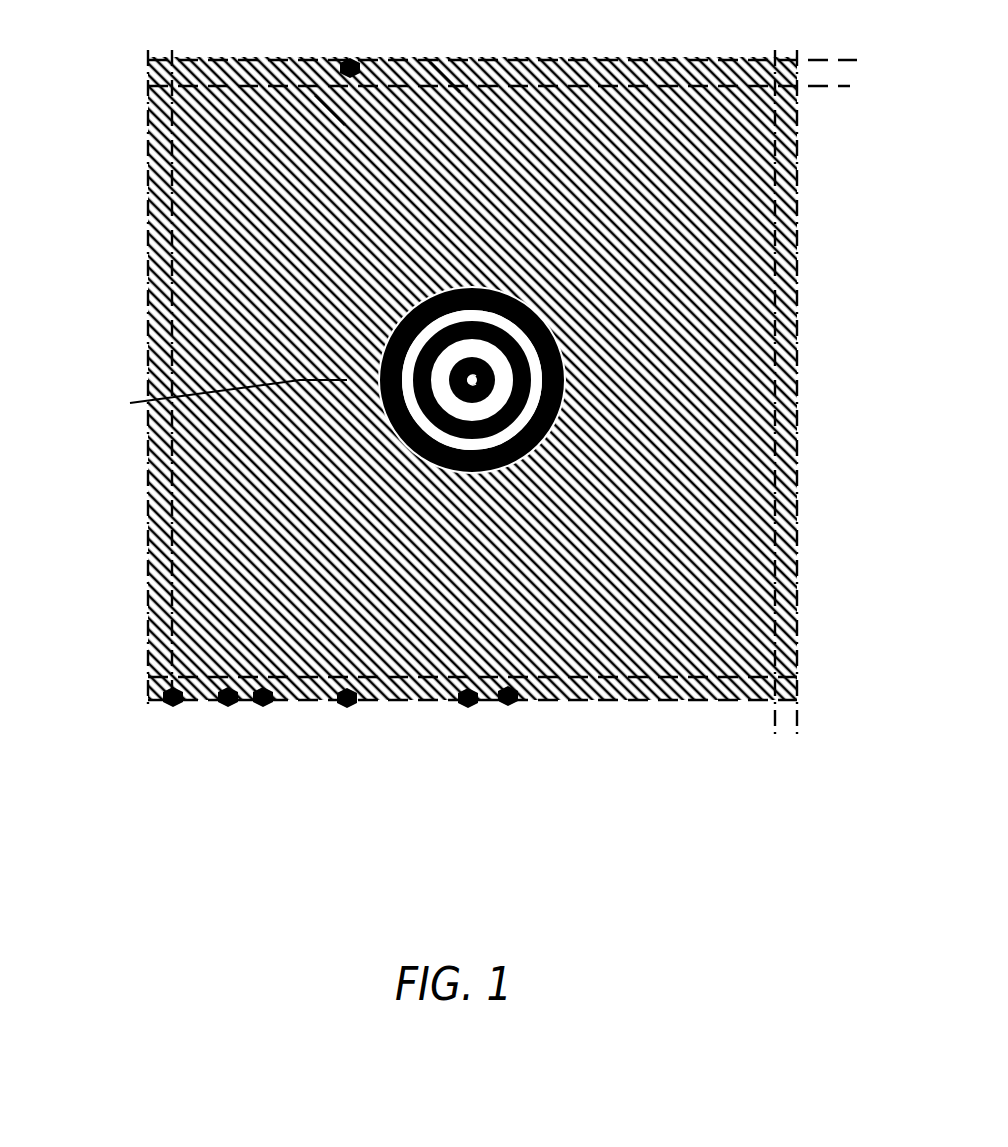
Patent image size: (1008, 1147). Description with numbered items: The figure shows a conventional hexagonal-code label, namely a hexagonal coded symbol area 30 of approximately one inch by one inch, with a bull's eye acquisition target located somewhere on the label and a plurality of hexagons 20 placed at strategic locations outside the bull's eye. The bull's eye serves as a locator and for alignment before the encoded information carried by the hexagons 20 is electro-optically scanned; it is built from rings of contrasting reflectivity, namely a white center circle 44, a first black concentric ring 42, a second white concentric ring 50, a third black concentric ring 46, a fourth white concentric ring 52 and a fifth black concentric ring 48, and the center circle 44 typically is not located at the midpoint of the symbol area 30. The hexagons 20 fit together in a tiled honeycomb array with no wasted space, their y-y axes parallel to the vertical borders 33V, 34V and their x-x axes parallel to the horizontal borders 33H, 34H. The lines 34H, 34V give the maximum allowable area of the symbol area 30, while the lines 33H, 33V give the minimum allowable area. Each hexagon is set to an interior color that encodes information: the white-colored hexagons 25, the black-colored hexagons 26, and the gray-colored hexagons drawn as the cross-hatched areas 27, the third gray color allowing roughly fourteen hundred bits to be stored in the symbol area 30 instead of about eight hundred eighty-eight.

The hexagons 20 is at (347, 698).
The white interior 25 is at (330, 110).
The black interior 26 is at (350, 60).
The cross-hatched areas 27 is at (442, 62).
The hexagonal coded symbol area 30 is at (120, 530).
The minimum horizontal border line 33H is at (807, 680).
The minimum vertical border line 33V is at (848, 86).
The maximum horizontal border line 34H is at (822, 60).
The maximum vertical border line 34V is at (800, 713).
The first black concentric ring 42 is at (452, 370).
The white center circle 44 is at (497, 388).
The third black concentric ring 46 is at (430, 392).
The fifth black concentric ring 48 is at (545, 343).
The second white concentric ring 50 is at (488, 350).
The fourth white concentric ring 52 is at (450, 318).